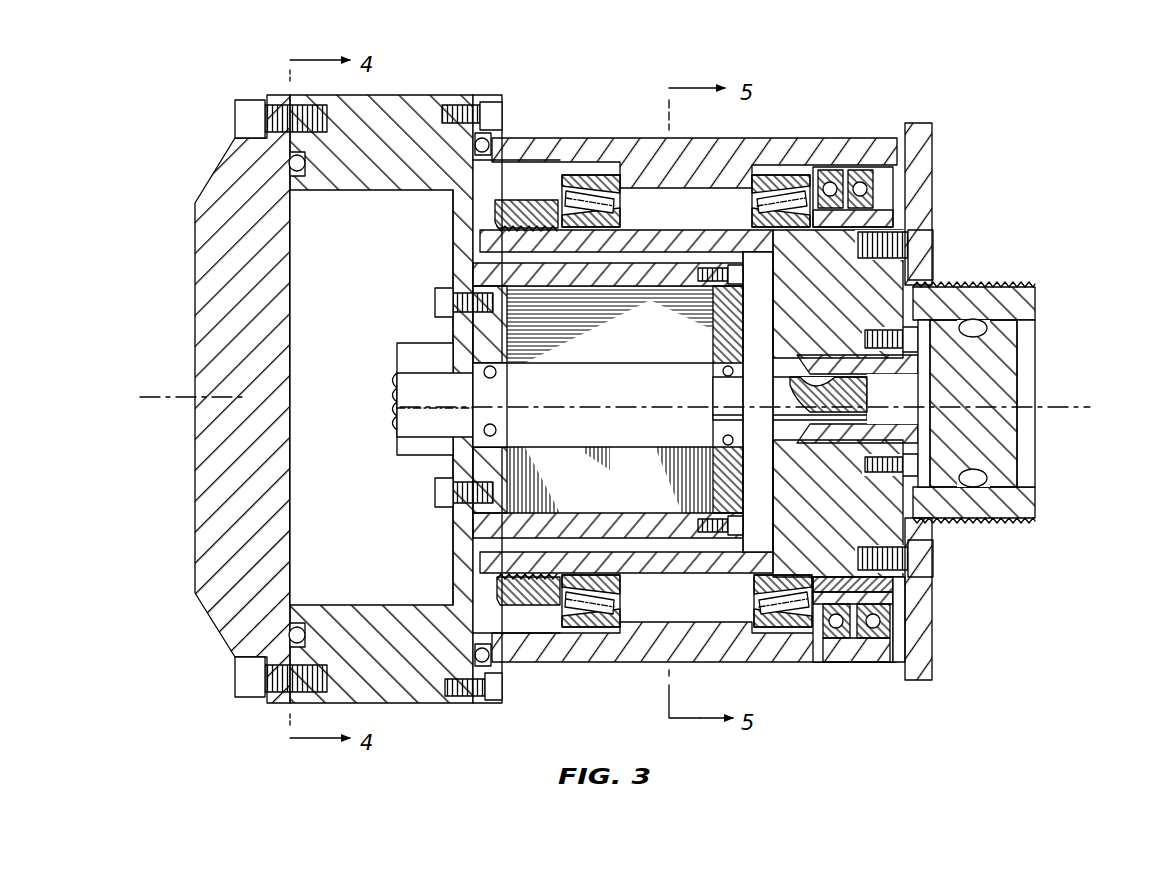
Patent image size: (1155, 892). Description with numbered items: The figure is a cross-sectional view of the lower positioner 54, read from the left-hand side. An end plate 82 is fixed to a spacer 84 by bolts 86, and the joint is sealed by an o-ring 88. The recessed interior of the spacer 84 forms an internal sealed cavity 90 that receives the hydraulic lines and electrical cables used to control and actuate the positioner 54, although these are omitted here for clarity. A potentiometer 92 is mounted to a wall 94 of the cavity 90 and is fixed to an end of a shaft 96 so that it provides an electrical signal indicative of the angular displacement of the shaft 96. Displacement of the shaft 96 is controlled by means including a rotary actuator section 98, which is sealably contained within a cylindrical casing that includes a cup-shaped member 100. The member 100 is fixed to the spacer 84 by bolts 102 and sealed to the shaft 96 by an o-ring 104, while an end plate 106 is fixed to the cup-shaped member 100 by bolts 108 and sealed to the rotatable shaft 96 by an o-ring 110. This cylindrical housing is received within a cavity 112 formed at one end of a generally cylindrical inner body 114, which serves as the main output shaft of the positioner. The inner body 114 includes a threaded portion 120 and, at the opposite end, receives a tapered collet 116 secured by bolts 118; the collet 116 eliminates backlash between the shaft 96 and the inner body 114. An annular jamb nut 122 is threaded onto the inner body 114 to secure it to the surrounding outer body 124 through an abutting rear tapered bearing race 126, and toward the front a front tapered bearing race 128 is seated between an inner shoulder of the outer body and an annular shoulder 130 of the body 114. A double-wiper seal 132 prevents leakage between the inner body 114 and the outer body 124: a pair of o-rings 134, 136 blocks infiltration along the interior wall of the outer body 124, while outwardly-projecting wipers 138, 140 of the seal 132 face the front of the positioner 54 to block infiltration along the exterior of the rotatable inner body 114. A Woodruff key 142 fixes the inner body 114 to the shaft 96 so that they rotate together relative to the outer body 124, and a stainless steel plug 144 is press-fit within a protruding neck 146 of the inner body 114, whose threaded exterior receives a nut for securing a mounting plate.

The positioner 54 is at (868, 98).
The end plate 82 is at (207, 543).
The spacer 84 is at (420, 685).
The bolts 86 is at (250, 108).
The o-ring 88 is at (290, 164).
The internal sealed cavity 90 is at (340, 533).
The potentiometer 92 is at (412, 348).
The wall 94 is at (463, 576).
The shaft 96 is at (492, 395).
The rotary actuator section 98 is at (612, 396).
The cup-shaped member 100 is at (565, 283).
The bolts 102 is at (435, 302).
The o-ring 104 is at (473, 430).
The end plate 106 is at (720, 350).
The bolts 108 is at (716, 334).
The o-ring 110 is at (718, 366).
The cavity 112 is at (776, 555).
The cylindrical inner body 114 is at (856, 306).
The tapered collet 116 is at (950, 378).
The bolts 118 is at (955, 325).
The threaded portion 120 is at (490, 232).
The annular jamb nut 122 is at (538, 205).
The outer body 124 is at (696, 178).
The rear tapered bearing race 126 is at (614, 213).
The front tapered bearing race 128 is at (750, 195).
The annular shoulder 130 is at (838, 222).
The double-wiper seal 132 is at (875, 642).
The o-ring 134 is at (830, 650).
The o-ring 136 is at (872, 652).
The wiper 138 is at (860, 590).
The wiper 140 is at (870, 624).
The Woodruff key 142 is at (830, 380).
The stainless steel plug 144 is at (1005, 443).
The protruding neck 146 is at (1035, 240).